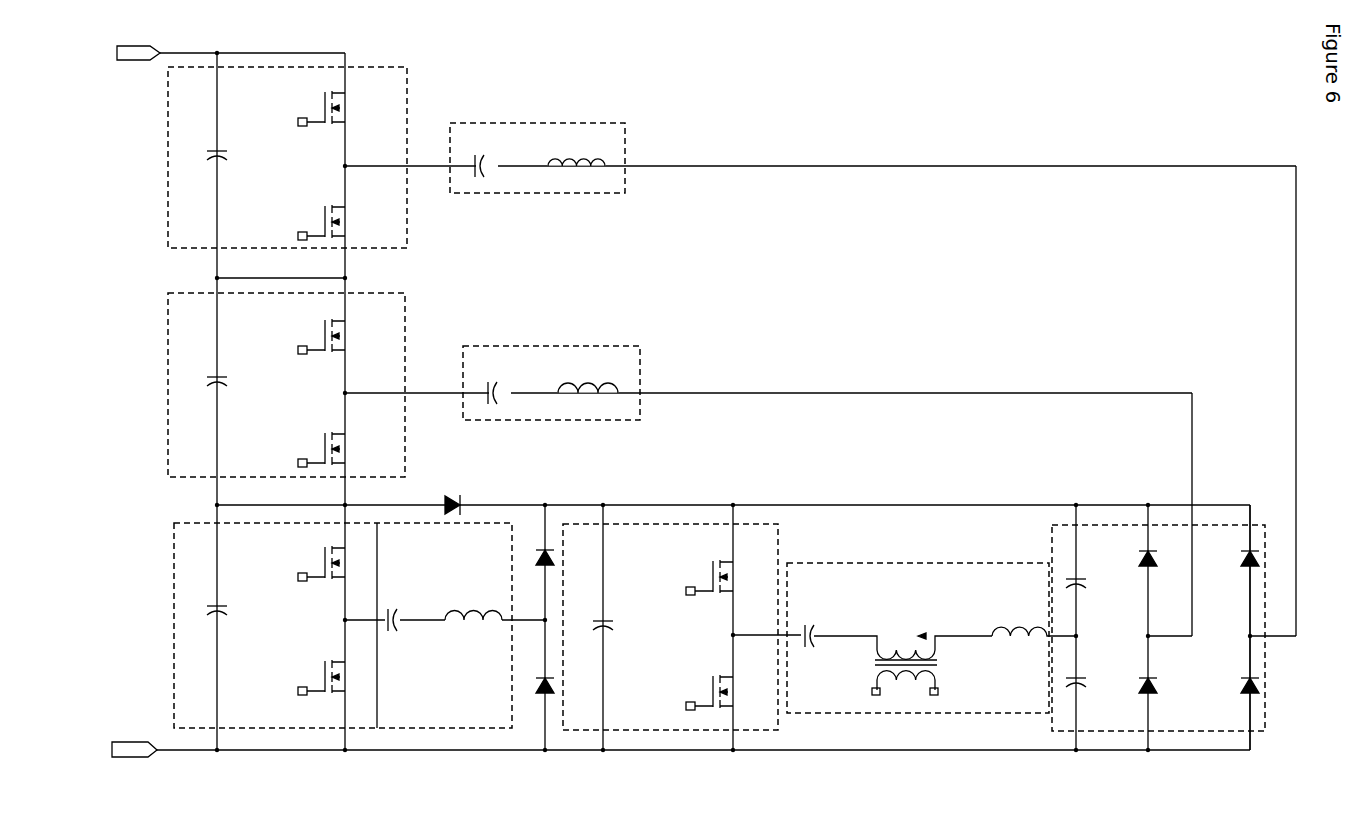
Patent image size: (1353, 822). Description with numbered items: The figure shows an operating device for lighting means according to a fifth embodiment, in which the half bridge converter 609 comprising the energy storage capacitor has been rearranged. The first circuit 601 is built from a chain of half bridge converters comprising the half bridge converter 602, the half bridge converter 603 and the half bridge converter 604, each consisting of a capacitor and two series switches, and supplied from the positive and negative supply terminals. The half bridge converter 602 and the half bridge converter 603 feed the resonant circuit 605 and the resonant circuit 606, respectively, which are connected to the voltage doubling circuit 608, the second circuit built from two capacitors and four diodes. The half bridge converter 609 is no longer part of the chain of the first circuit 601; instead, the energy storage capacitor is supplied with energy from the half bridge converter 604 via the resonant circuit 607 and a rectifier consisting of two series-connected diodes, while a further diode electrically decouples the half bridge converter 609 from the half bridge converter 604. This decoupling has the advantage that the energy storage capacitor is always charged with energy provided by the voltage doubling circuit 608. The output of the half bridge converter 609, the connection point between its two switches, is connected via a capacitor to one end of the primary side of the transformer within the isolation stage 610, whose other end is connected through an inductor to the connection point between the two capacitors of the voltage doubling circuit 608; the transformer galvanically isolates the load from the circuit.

The first circuit 601 is at (679, 421).
The half bridge converter 602 is at (255, 157).
The half bridge converter 603 is at (254, 385).
The half bridge converter 604 is at (307, 625).
The resonant circuit 605 is at (537, 135).
The resonant circuit 606 is at (551, 361).
The resonant circuit 607 is at (480, 636).
The voltage doubling circuit 608 is at (1174, 650).
The half bridge converter 609 is at (670, 650).
The transformer circuit 610 is at (931, 679).